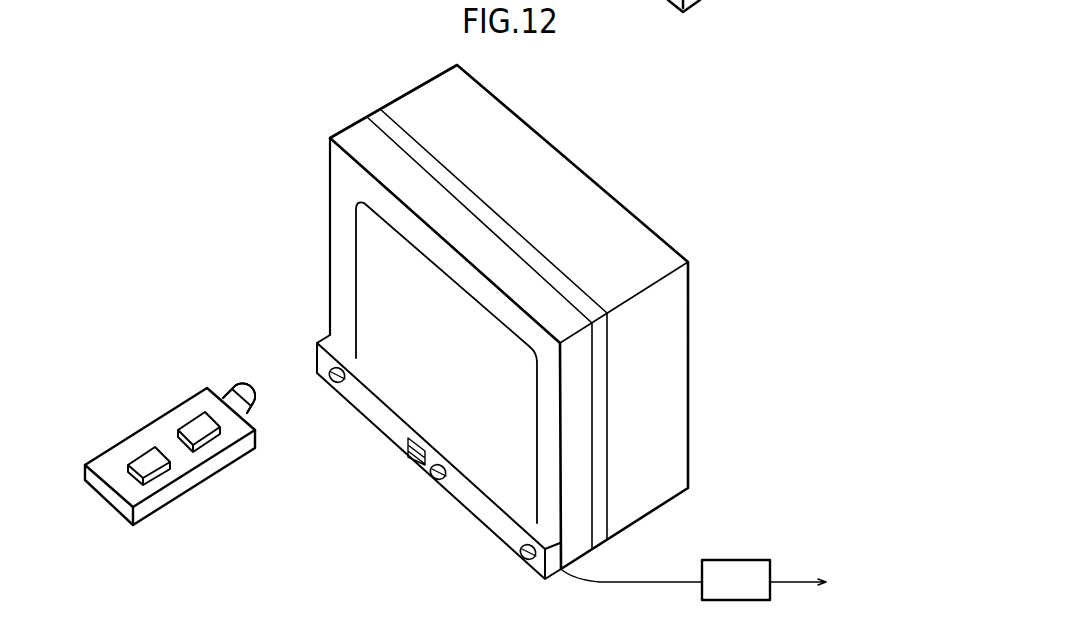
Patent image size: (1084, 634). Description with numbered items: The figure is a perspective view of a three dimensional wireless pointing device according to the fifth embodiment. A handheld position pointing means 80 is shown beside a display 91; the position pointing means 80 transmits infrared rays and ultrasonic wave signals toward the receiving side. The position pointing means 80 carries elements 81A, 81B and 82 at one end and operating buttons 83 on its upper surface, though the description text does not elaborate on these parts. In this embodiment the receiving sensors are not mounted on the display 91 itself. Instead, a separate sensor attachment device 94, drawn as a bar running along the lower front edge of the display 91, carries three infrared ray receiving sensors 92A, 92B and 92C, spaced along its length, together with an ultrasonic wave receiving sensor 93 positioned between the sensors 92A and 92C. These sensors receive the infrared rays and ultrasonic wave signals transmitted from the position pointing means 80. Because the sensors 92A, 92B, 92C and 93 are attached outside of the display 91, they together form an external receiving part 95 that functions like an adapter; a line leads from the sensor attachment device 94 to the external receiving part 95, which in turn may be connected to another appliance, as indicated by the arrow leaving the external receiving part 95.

The position pointing means 80 is at (110, 467).
The light emitting element 81A is at (237, 400).
The light emitting element 81B is at (189, 368).
The light receiving element 82 is at (189, 368).
The operation buttons 83 is at (203, 428).
The display 91 is at (688, 362).
The infrared ray receiving sensor 92A is at (334, 383).
The infrared ray receiving sensor 92B is at (520, 557).
The infrared ray receiving sensor 92C is at (434, 480).
The ultrasonic wave receiving sensor 93 is at (408, 455).
The sensor attachment device 94 is at (387, 430).
The external receiving part 95 is at (735, 566).